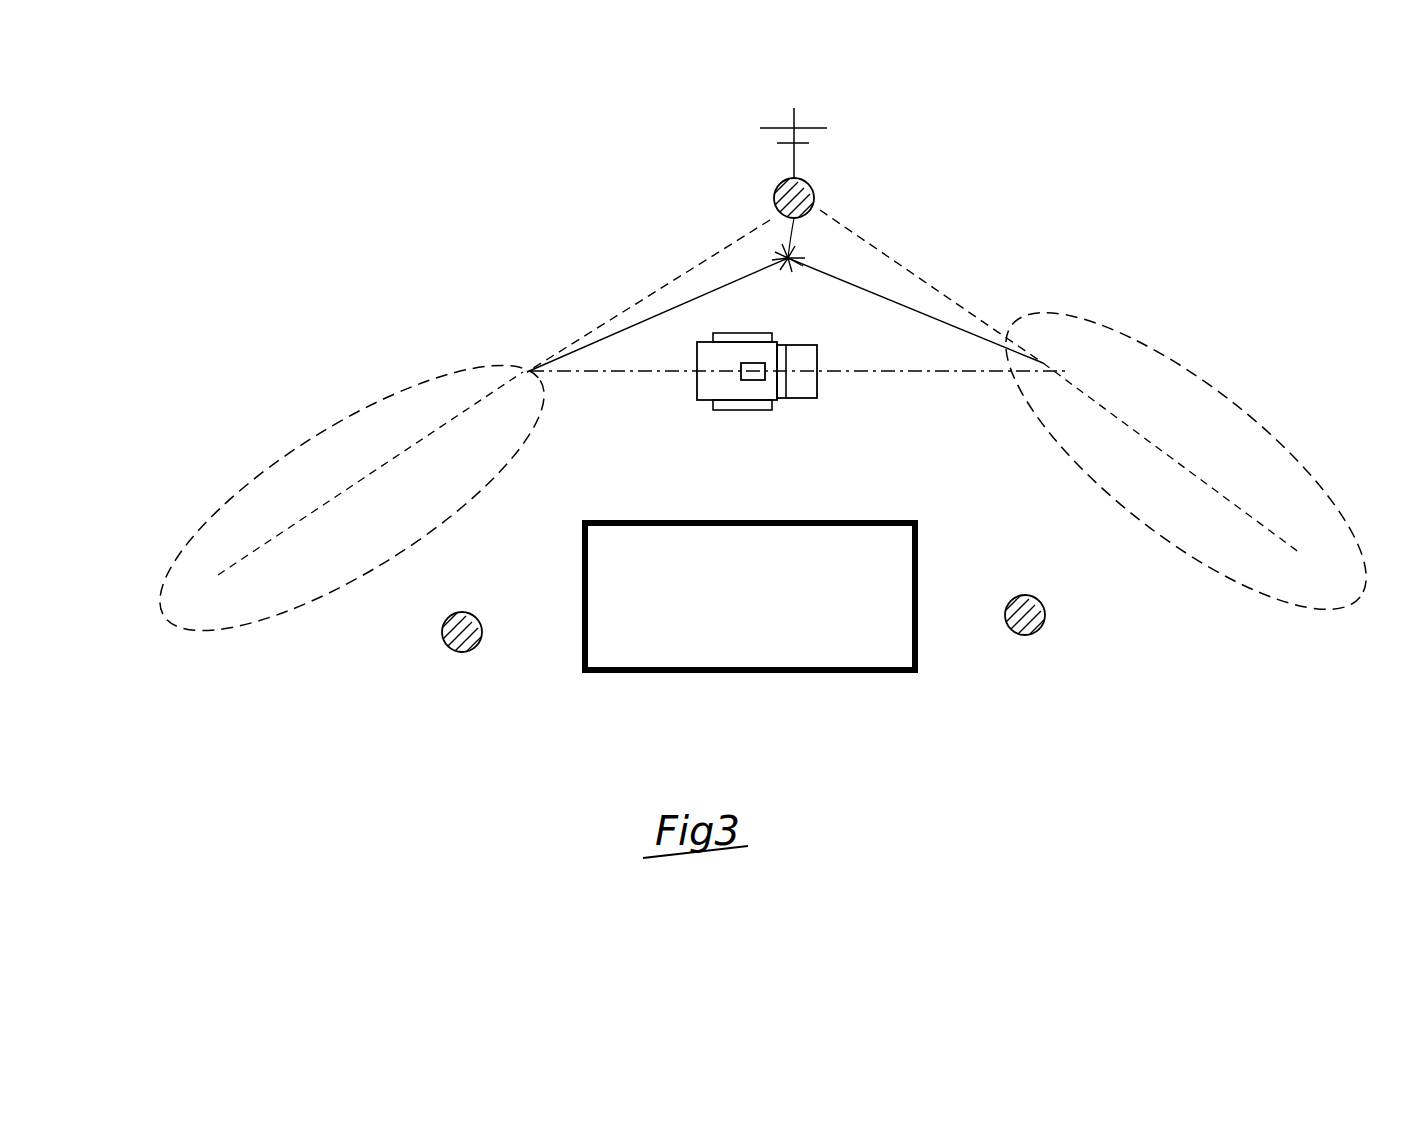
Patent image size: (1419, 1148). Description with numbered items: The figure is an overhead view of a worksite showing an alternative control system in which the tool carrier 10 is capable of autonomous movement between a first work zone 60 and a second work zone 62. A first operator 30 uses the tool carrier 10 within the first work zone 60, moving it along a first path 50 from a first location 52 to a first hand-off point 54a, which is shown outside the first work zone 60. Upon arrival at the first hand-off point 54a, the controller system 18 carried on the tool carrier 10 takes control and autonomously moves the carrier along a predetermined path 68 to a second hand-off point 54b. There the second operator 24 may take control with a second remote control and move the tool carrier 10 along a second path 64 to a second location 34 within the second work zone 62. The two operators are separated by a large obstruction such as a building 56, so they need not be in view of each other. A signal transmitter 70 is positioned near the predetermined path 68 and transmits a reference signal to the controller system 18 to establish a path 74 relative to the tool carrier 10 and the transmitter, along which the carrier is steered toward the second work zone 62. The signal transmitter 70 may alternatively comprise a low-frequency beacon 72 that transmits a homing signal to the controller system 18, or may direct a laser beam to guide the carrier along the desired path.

The tool carrier 10 is at (738, 332).
The controller system 18 is at (746, 388).
The second operator 24 is at (1034, 634).
The first operator 30 is at (468, 650).
The second location 34 is at (1318, 576).
The first path 50 is at (324, 505).
The first location 52 is at (172, 588).
The first hand-off point 54a is at (522, 368).
The second hand-off point 54b is at (1043, 348).
The building 56 is at (733, 675).
The first work zone 60 is at (333, 424).
The second work zone 62 is at (1178, 363).
The second path 64 is at (1200, 480).
The predetermined path 68 is at (655, 375).
The signal transmitter 70 is at (776, 190).
The low-frequency beacon 72 is at (772, 126).
The path 74 is at (714, 283).